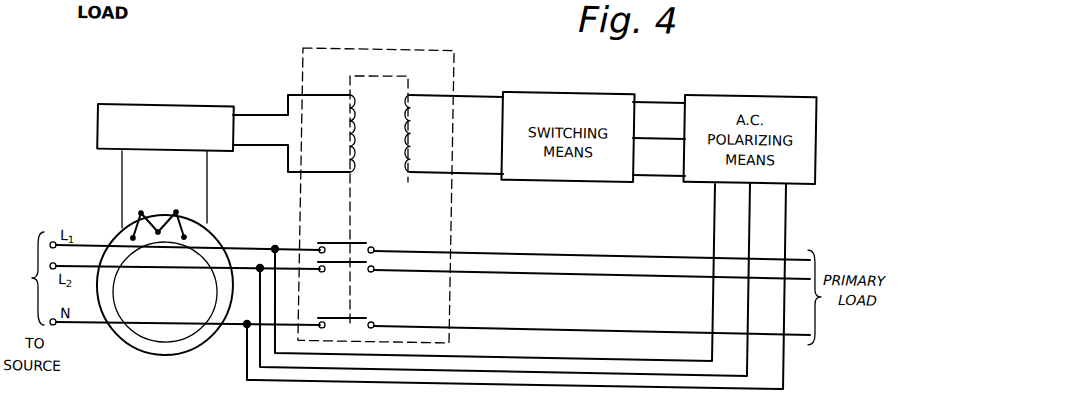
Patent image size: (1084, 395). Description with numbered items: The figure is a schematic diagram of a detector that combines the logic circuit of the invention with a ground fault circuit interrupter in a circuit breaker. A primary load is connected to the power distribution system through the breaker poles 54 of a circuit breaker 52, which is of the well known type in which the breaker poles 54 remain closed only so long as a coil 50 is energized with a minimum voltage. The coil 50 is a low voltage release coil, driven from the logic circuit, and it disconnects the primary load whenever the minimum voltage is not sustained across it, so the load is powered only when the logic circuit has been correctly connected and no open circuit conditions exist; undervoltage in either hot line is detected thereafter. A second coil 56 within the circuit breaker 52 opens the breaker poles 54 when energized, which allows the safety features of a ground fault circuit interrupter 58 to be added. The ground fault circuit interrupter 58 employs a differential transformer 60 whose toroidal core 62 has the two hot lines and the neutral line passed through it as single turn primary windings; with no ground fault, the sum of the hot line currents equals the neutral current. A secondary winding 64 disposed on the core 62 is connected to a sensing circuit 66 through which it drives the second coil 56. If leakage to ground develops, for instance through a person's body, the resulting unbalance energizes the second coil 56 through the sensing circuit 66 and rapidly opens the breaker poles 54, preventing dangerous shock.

The coil 50 is at (400, 150).
The circuit breaker 52 is at (413, 40).
The breaker poles 54 is at (364, 237).
The second coil 56 is at (361, 147).
The ground fault circuit interrupter 58 is at (100, 199).
The differential transformer 60 is at (193, 276).
The toroidal core 62 is at (216, 232).
The secondary winding 64 is at (159, 225).
The sensing circuit 66 is at (194, 101).